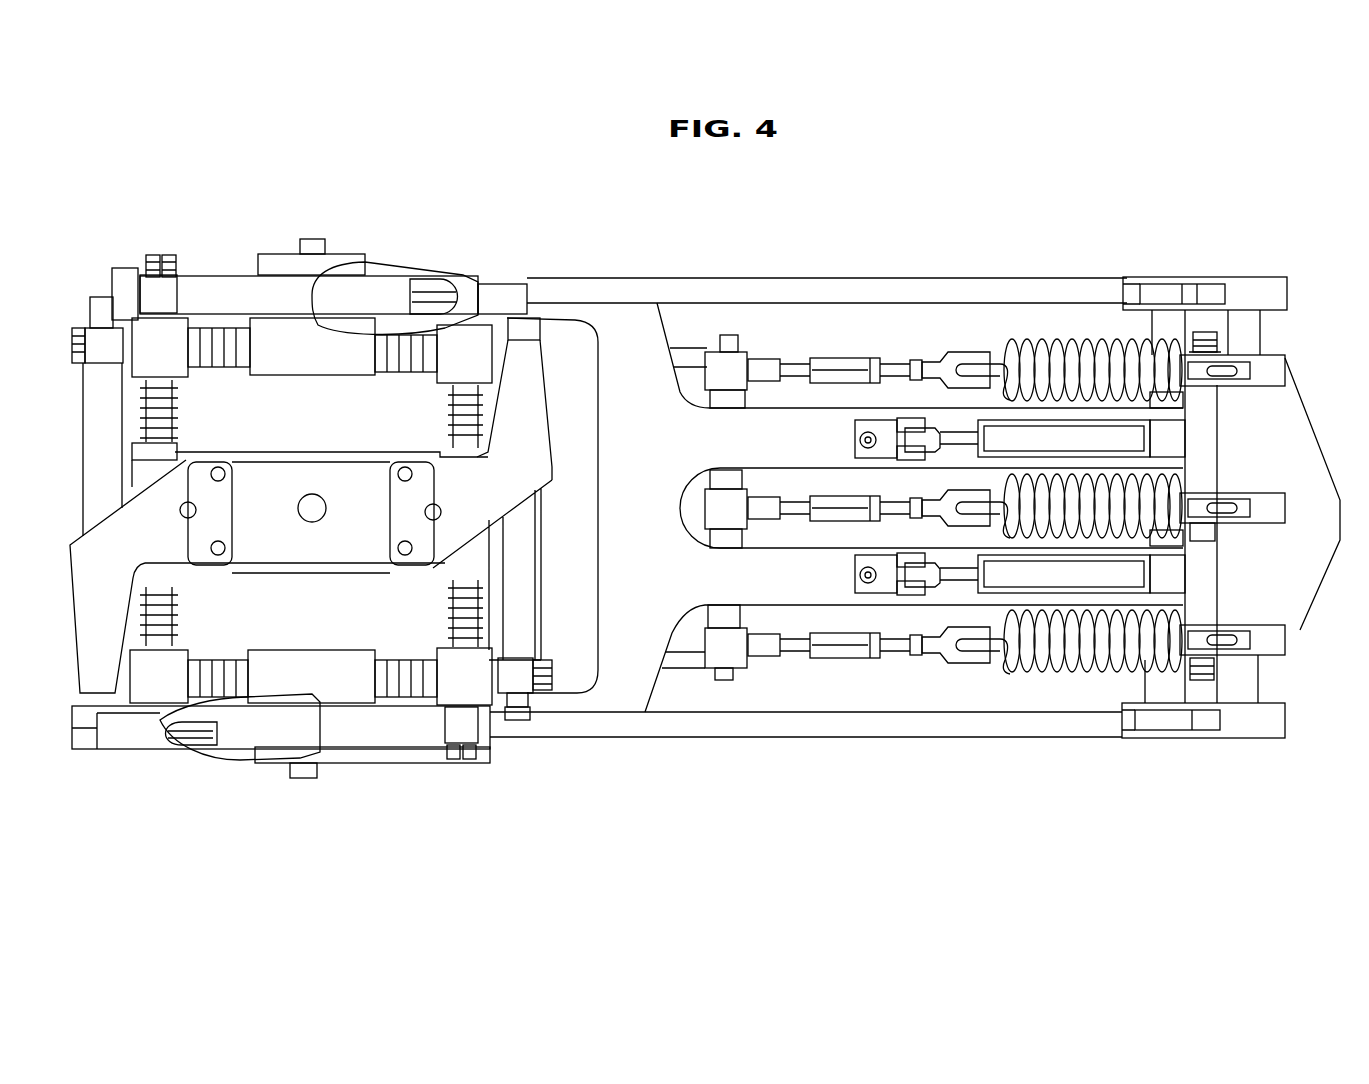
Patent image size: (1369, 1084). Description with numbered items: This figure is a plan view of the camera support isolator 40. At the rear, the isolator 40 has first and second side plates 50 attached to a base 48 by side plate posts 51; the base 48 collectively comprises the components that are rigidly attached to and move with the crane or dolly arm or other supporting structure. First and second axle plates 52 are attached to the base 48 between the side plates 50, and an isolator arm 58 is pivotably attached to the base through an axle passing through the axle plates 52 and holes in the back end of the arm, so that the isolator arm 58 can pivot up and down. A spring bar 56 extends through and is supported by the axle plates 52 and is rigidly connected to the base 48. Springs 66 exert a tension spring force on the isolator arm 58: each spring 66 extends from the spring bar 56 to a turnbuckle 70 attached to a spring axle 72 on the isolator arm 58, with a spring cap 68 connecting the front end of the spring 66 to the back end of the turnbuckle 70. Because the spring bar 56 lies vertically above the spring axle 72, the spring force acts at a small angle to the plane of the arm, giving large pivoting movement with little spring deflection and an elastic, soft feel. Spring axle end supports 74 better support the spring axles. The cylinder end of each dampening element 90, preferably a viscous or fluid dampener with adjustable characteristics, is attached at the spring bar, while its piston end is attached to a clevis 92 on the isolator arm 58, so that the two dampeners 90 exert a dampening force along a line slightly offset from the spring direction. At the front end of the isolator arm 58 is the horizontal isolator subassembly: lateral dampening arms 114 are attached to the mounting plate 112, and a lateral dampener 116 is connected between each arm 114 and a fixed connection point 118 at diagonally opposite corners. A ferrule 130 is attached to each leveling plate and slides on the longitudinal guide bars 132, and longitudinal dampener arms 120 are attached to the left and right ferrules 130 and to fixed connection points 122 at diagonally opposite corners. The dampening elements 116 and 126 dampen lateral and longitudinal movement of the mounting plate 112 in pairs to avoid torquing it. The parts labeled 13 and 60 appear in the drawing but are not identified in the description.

The cross bar 13 is at (333, 360).
The isolator 40 is at (924, 484).
The base 48 is at (1300, 630).
The side plates 50 is at (1168, 323).
The side plate posts 51 is at (1245, 321).
The axle plates 52 is at (1292, 374).
The spring bar 56 is at (1217, 338).
The isolator arm 58 is at (643, 343).
The rail 60 is at (850, 292).
The springs 66 is at (1010, 668).
The spring cap 68 is at (937, 654).
The turnbuckle 70 is at (822, 659).
The spring axle 72 is at (732, 345).
The spring axle end supports 74 is at (690, 662).
The dampening element 90 is at (1066, 447).
The clevis 92 is at (857, 432).
The mounting plate 112 is at (282, 552).
The lateral dampening arms 114 is at (177, 445).
The lateral dampener 116 is at (103, 388).
The fixed connection point 118 is at (140, 297).
The longitudinal dampener arms 120 is at (485, 295).
The fixed connection points 122 is at (150, 297).
The longitudinal dampening elements 126 is at (362, 302).
The ferrule 130 is at (467, 560).
The longitudinal guide bars 132 is at (225, 662).